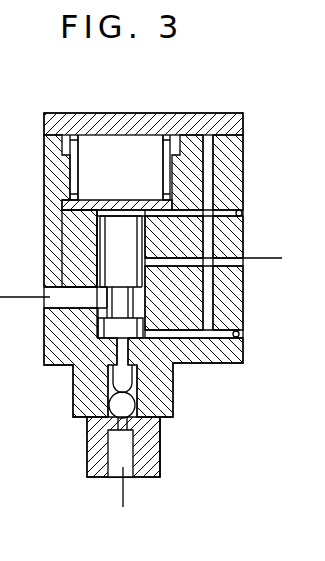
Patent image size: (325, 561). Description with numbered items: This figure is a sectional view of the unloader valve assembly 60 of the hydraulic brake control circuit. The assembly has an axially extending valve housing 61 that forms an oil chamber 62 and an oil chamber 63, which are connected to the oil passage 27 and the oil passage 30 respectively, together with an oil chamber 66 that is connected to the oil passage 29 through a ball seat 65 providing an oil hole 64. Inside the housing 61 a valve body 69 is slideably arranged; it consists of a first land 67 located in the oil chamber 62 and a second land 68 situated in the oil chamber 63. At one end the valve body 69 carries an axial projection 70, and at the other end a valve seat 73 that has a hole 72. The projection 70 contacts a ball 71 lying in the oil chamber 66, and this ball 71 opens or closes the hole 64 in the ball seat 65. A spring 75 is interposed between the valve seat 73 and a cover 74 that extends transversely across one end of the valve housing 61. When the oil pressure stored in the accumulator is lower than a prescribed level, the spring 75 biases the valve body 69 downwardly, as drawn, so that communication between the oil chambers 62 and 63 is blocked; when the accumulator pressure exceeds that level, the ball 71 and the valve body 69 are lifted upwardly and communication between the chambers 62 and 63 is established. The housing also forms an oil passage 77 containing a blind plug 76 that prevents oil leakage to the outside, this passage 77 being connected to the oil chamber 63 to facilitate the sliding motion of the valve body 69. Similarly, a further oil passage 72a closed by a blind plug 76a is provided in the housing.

The unloader valve assembly 60 is at (158, 101).
The cover 74 is at (213, 112).
The valve housing 61 is at (44, 198).
The second land 68 is at (97, 236).
The first land 67 is at (101, 321).
The oil chamber 66 is at (162, 388).
The oil passage 72a is at (215, 195).
The oil chamber 63 is at (243, 268).
The valve body 69 is at (150, 262).
The oil passage 77 is at (182, 336).
The hole 72 is at (165, 198).
The spring 75 is at (80, 160).
The blind plug 76a is at (243, 213).
The oil passage 30 is at (256, 262).
The blind plug 76 is at (243, 334).
The valve seat 73 is at (106, 221).
The axial projection 70 is at (140, 358).
The ball 71 is at (110, 405).
The oil hole 64 is at (140, 432).
The ball seat 65 is at (160, 470).
The oil passage 29 is at (121, 490).
The oil chamber 62 is at (46, 301).
The oil passage 27 is at (25, 281).